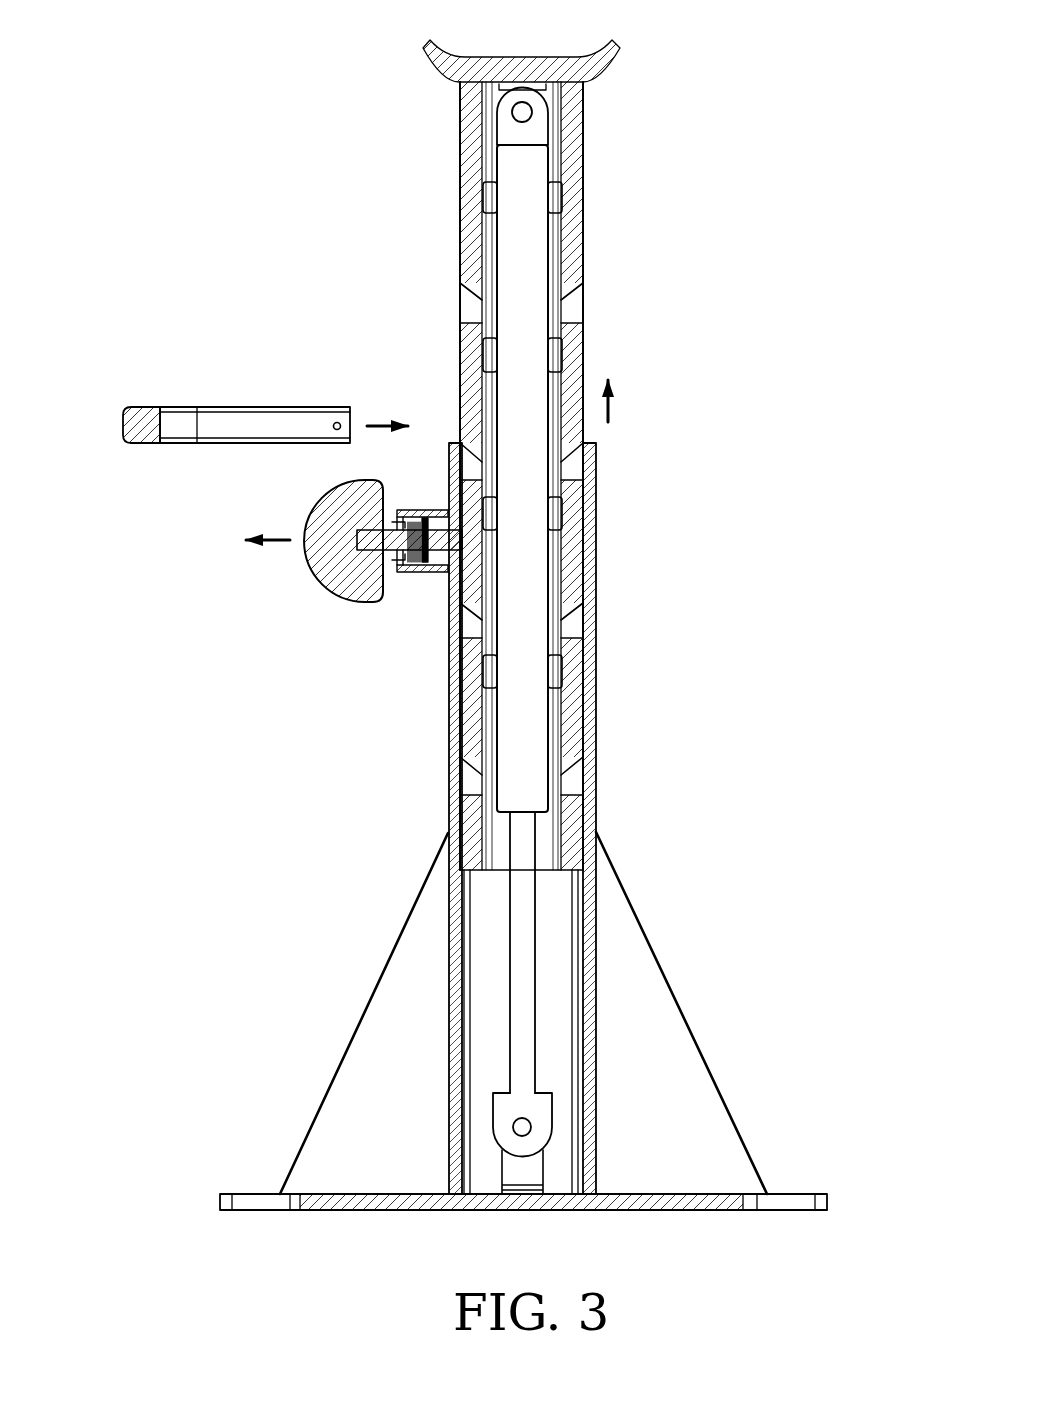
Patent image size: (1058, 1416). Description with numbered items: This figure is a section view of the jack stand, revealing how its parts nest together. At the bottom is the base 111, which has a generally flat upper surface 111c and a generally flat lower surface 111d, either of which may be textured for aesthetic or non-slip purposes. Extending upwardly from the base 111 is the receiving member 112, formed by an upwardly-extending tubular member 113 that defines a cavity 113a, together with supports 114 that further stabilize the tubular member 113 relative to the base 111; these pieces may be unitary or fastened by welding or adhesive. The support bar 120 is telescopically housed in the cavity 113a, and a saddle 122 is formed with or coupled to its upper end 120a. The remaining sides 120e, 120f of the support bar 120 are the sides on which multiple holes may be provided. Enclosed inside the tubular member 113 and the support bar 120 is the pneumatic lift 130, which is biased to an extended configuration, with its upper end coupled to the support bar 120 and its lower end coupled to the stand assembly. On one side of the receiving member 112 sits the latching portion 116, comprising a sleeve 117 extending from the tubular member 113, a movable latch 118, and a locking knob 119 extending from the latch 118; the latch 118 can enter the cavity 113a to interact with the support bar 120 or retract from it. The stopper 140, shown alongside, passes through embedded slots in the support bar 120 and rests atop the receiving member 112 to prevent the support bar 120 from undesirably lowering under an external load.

The base 111 is at (524, 1194).
The upper surface 111c is at (715, 1193).
The lower surface 111d is at (665, 1210).
The receiving member 112 is at (531, 1013).
The tubular member 113 is at (597, 742).
The cavity 113a is at (500, 833).
The supports 114 is at (667, 1047).
The latching portion 116 is at (321, 533).
The sleeve 117 is at (425, 510).
The latch 118 is at (440, 542).
The locking knob 119 is at (317, 570).
The support bar 120 is at (597, 186).
The upper end 120a is at (604, 101).
The side 120e is at (446, 198).
The side 120f is at (610, 247).
The saddle 122 is at (500, 57).
The pneumatic lift 130 is at (525, 508).
The stopper 140 is at (124, 395).